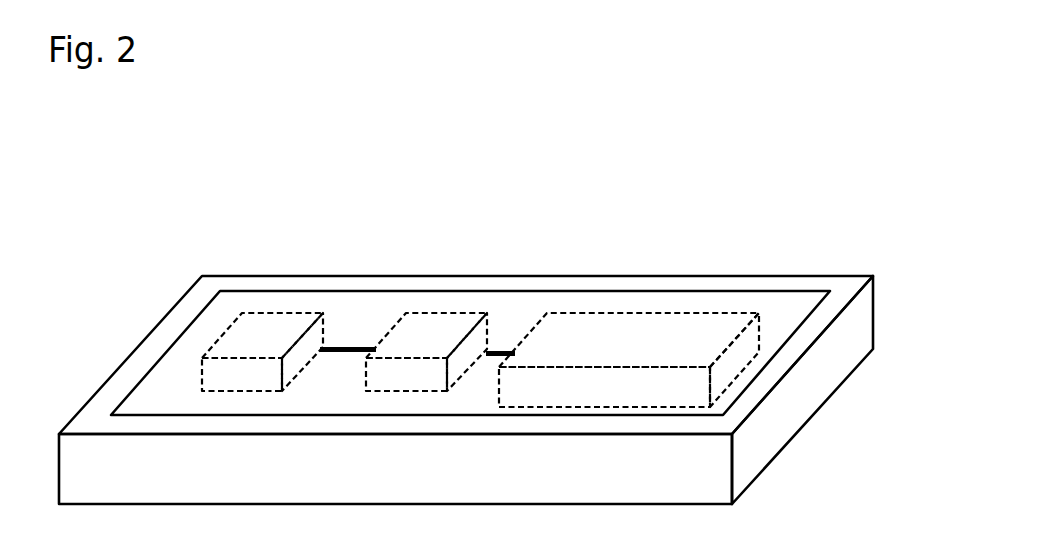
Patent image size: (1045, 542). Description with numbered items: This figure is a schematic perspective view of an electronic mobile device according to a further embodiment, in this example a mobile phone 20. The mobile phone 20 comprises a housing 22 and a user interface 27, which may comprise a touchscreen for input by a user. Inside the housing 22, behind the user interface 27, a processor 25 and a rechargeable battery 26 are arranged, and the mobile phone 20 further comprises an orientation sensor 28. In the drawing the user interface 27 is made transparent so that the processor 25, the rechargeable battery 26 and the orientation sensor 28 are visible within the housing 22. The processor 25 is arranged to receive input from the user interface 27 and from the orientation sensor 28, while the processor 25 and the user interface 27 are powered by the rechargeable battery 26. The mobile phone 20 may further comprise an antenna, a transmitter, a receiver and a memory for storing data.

The mobile phone 20 is at (482, 315).
The housing 22 is at (858, 283).
The processor 25 is at (427, 313).
The rechargeable battery 26 is at (668, 313).
The user interface 27 is at (787, 307).
The orientation sensor 28 is at (268, 313).